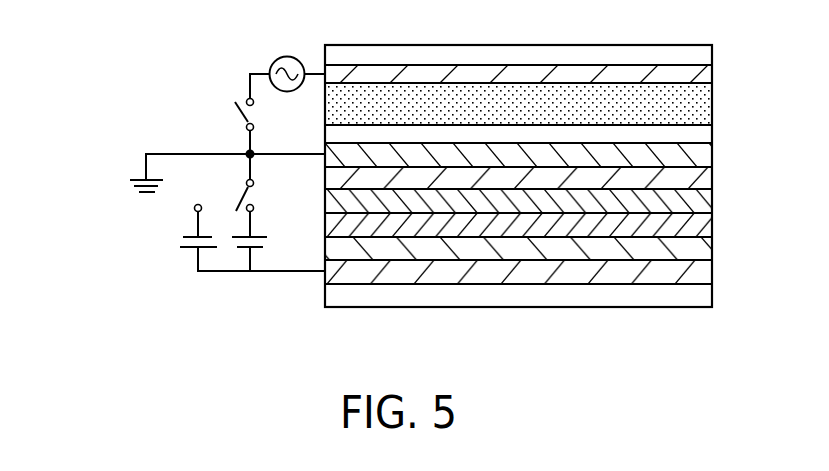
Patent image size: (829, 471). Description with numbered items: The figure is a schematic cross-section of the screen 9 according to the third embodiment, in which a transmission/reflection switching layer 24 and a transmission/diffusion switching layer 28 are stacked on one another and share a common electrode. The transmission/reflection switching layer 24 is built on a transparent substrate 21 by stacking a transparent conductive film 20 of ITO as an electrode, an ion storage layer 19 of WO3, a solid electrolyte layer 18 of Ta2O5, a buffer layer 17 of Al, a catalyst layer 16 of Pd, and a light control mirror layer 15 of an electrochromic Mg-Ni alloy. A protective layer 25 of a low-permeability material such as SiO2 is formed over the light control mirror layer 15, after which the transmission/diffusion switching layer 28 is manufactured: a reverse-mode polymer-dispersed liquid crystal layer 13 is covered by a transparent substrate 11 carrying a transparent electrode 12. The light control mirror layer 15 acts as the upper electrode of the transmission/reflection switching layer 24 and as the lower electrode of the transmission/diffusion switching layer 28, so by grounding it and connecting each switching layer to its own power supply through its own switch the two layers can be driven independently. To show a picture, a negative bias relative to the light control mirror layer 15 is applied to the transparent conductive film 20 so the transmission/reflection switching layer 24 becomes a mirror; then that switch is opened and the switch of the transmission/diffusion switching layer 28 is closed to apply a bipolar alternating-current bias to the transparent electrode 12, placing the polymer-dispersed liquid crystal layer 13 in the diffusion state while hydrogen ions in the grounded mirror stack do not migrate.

The screen 9 is at (60, 307).
The transmission/diffusion switching layer 28 is at (118, 47).
The transmission/reflection switching layer 24 is at (118, 128).
The transparent substrate 11 is at (705, 54).
The transparent electrode 12 is at (705, 79).
The polymer-dispersed liquid crystal layer 13 is at (705, 109).
The protective layer 25 is at (705, 135).
The light control mirror layer 15 is at (705, 155).
The catalyst layer 16 is at (705, 180).
The buffer layer 17 is at (705, 205).
The solid electrolyte layer 18 is at (705, 227).
The ion storage layer 19 is at (705, 250).
The transparent conductive film 20 is at (705, 275).
The transparent substrate 21 is at (705, 299).